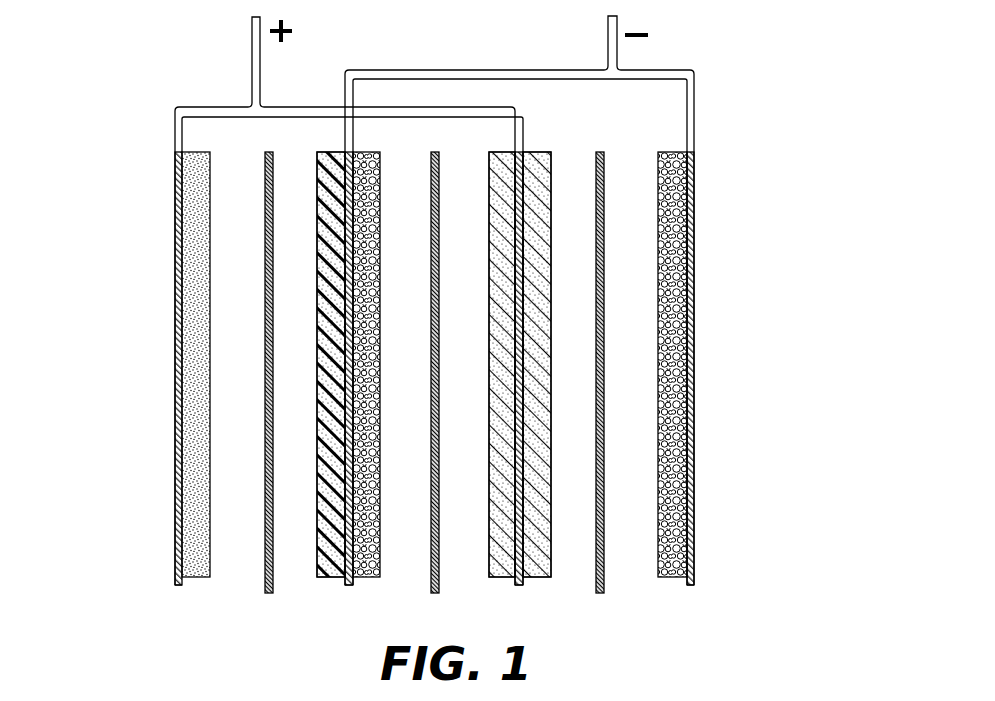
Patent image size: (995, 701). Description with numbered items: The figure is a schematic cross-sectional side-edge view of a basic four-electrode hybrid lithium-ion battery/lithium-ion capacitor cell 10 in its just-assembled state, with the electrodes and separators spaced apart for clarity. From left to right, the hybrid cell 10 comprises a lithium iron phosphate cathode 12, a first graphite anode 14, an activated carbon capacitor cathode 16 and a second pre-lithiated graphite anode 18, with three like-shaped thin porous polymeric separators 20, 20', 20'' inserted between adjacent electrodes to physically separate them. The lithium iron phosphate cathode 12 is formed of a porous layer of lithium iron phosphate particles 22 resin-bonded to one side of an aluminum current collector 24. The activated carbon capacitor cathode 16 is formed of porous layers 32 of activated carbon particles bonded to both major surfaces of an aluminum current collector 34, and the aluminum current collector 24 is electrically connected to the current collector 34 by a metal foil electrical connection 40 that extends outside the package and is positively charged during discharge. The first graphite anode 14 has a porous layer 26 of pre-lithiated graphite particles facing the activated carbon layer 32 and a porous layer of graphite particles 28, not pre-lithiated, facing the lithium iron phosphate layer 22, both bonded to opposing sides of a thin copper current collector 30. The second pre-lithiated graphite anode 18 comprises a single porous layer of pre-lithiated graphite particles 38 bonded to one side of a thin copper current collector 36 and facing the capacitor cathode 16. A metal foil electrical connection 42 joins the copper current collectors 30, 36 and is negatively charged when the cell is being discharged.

The hybrid lithium-ion battery/lithium-ion capacitor cell 10 is at (160, 70).
The lithium iron phosphate cathode 12 is at (184, 352).
The first graphite anode 14 is at (341, 377).
The activated carbon capacitor cathode 16 is at (548, 390).
The second pre-lithiated graphite anode 18 is at (702, 368).
The separator 20 is at (306, 356).
The separator 20' is at (468, 356).
The separator 20'' is at (642, 354).
The porous layer of lithium iron phosphate particles 22 is at (197, 170).
The aluminum current collector 24 is at (182, 373).
The porous layer of pre-lithiated graphite particles 26 is at (378, 172).
The porous layer of graphite particles 28 is at (323, 287).
The copper current collector 30 is at (345, 98).
The porous layers of activated carbon particles 32 is at (497, 273).
The aluminum current collector 34 is at (523, 133).
The copper current collector 36 is at (694, 122).
The porous layer of pre-lithiated graphite particles 38 is at (663, 247).
The metal foil electrical connection 40 is at (261, 57).
The metal foil electrical connection 42 is at (608, 43).